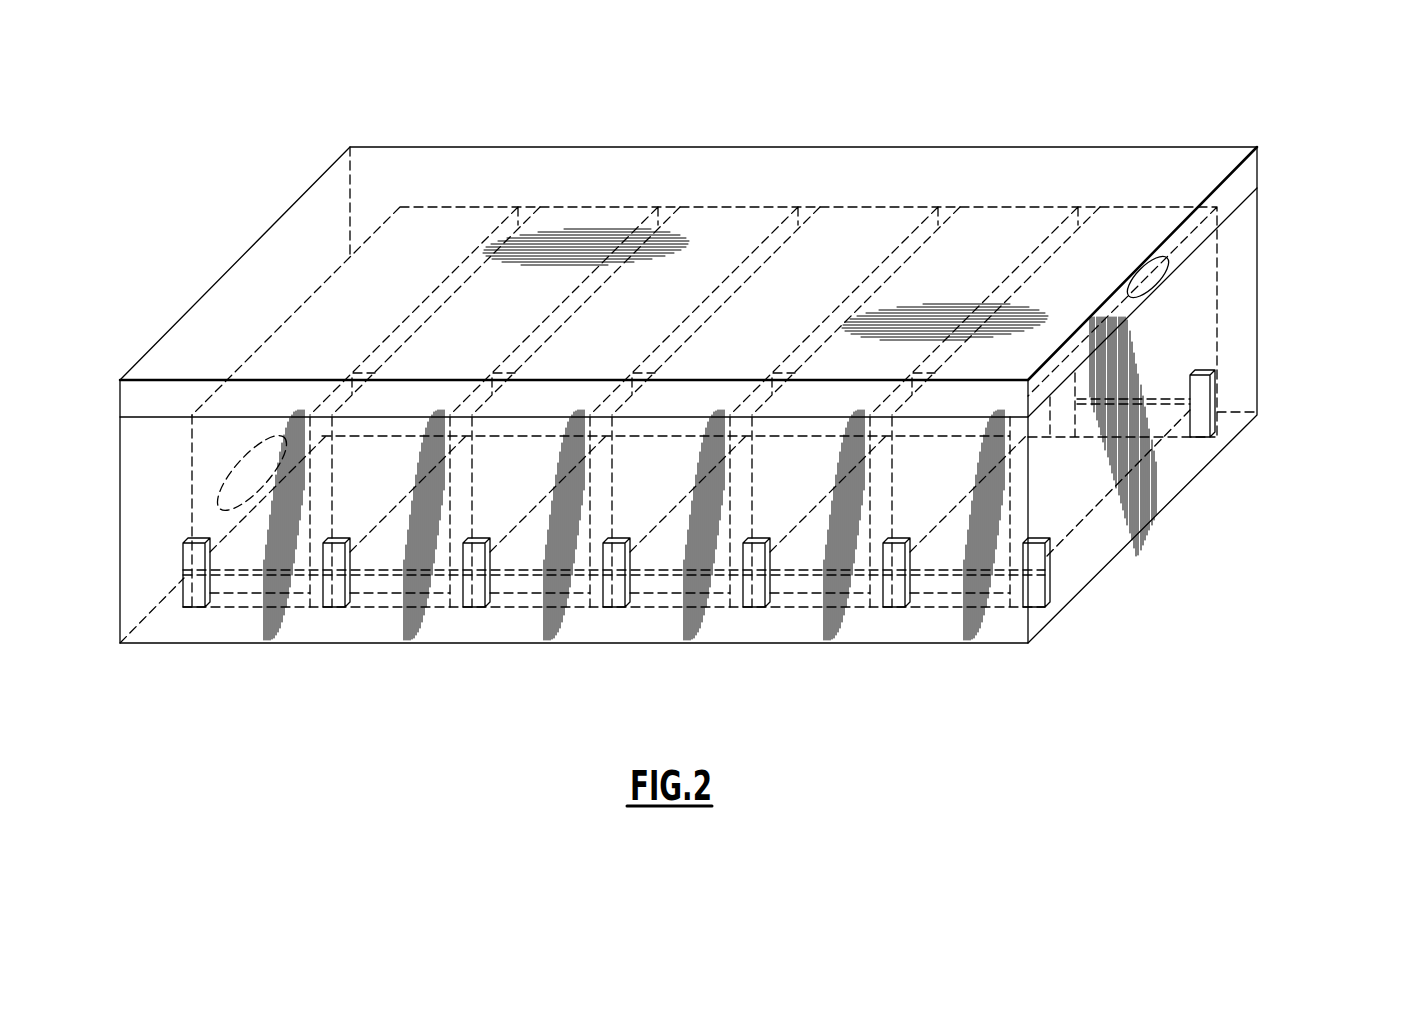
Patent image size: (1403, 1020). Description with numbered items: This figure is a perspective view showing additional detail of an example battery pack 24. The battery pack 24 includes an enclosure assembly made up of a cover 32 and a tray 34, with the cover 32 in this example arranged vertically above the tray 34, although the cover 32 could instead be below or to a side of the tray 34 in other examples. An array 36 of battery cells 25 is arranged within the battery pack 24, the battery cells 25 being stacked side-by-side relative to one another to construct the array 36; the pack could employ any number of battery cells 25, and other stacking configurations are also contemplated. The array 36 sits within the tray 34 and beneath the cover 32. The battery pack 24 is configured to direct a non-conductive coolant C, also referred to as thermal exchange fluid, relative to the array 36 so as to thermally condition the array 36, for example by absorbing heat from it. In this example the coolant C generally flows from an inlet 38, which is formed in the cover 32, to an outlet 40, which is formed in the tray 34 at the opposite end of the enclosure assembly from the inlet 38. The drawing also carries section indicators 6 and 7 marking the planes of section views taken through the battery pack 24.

The battery pack 24 is at (702, 375).
The battery cells 25 is at (249, 543).
The cover 32 is at (1262, 157).
The tray 34 is at (1262, 222).
The array 36 is at (175, 503).
The inlet 38 is at (1137, 297).
The outlet 40 is at (213, 498).
The section line 6- 6 is at (157, 283).
The section line 7- 7 is at (960, 135).
The coolant C is at (227, 473).